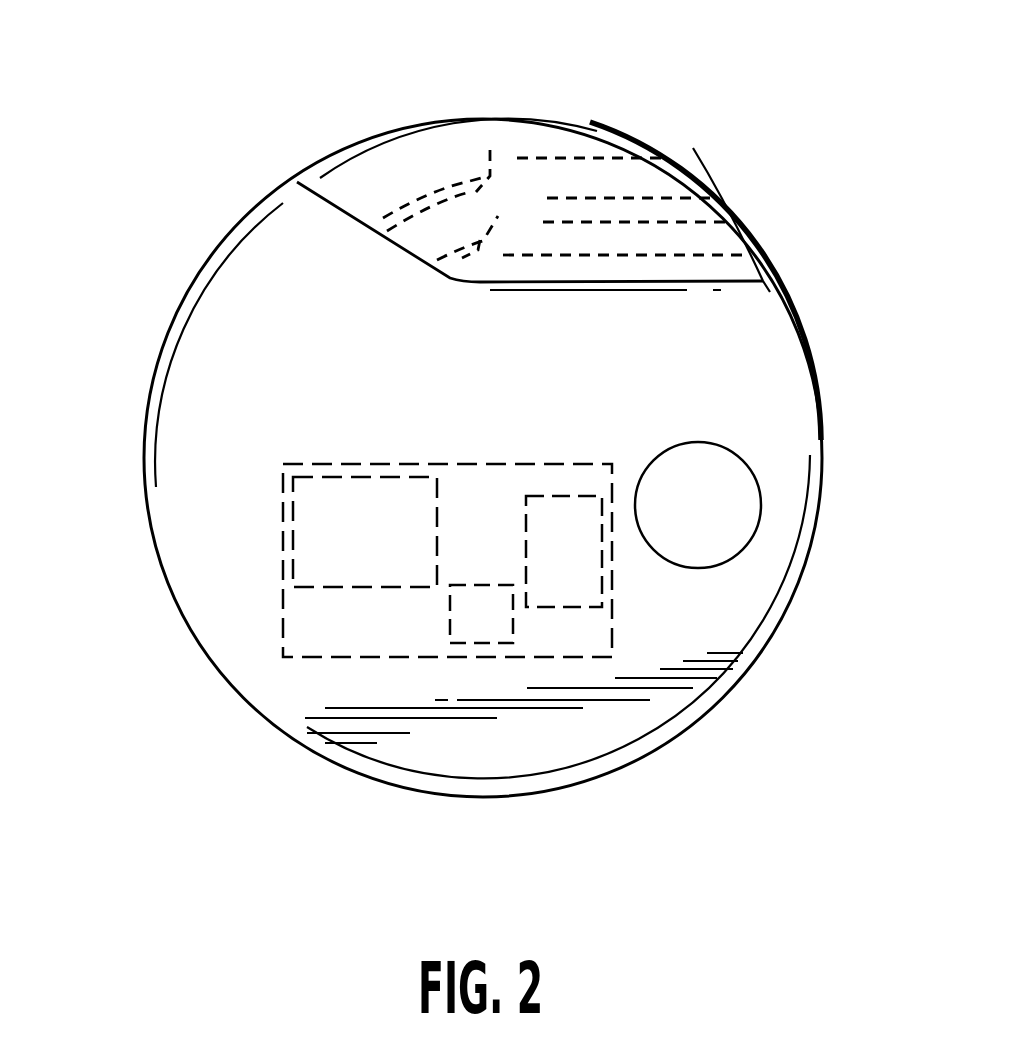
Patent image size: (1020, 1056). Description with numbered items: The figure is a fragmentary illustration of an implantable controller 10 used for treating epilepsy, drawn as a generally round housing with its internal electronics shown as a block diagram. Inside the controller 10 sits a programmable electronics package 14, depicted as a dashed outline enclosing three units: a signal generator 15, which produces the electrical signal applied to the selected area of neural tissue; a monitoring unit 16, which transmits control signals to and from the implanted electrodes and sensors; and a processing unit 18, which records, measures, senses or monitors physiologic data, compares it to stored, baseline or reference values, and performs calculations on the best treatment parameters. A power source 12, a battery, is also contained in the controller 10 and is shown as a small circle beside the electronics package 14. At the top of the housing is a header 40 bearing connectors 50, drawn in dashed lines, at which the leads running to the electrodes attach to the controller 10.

The controller 10 is at (173, 307).
The power source 12 is at (725, 475).
The programmable electronics package 14 is at (275, 634).
The signal generator 15 is at (552, 508).
The monitoring unit 16 is at (467, 603).
The processing unit 18 is at (345, 488).
The header 40 is at (693, 148).
The connectors 50 is at (483, 250).